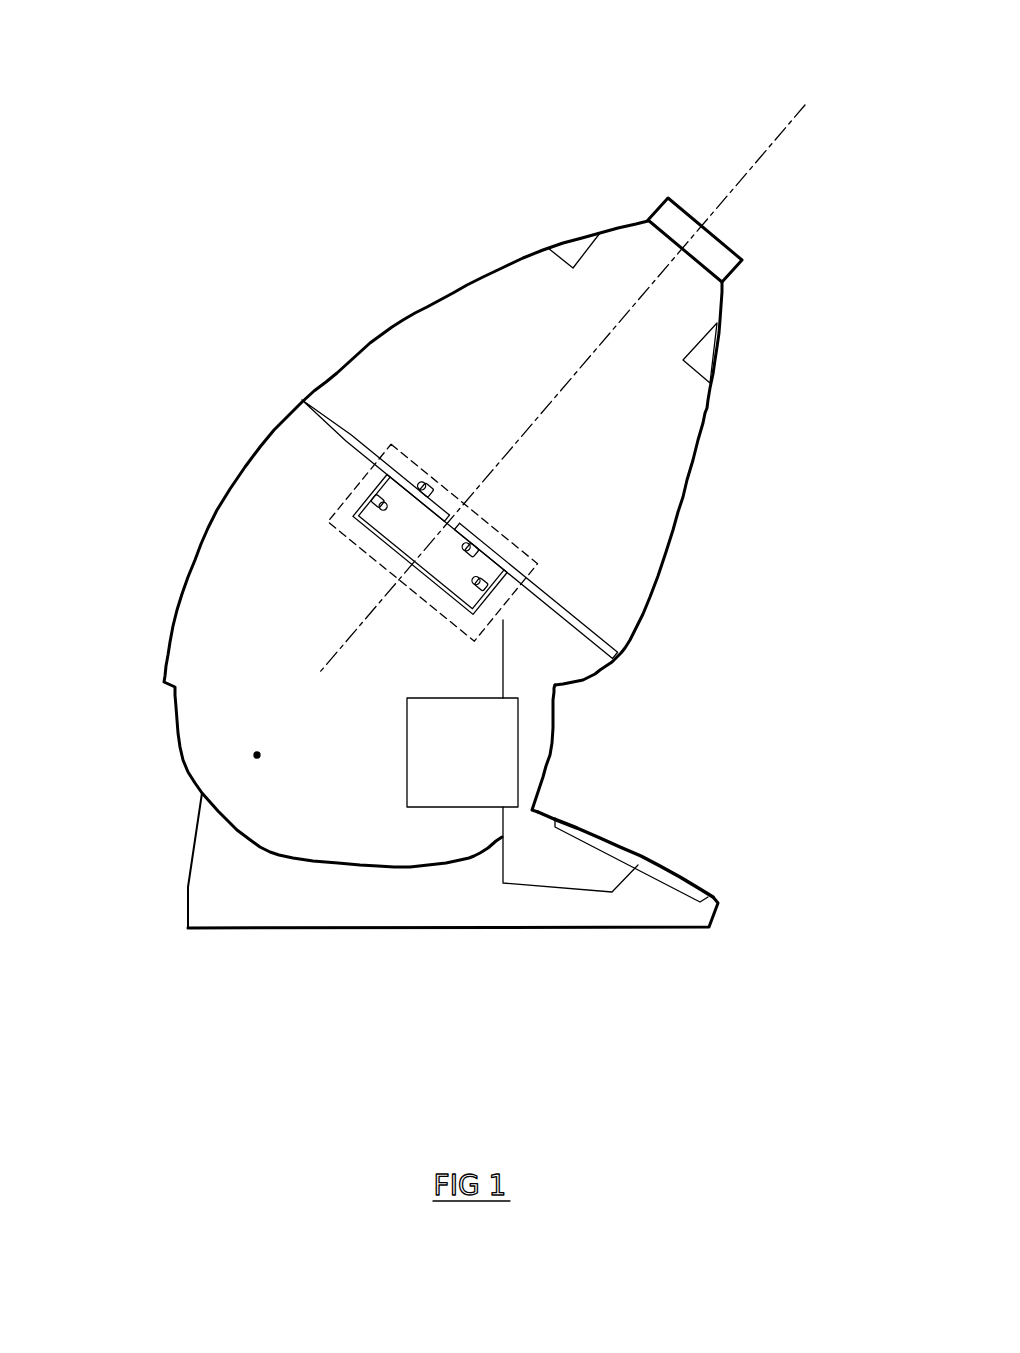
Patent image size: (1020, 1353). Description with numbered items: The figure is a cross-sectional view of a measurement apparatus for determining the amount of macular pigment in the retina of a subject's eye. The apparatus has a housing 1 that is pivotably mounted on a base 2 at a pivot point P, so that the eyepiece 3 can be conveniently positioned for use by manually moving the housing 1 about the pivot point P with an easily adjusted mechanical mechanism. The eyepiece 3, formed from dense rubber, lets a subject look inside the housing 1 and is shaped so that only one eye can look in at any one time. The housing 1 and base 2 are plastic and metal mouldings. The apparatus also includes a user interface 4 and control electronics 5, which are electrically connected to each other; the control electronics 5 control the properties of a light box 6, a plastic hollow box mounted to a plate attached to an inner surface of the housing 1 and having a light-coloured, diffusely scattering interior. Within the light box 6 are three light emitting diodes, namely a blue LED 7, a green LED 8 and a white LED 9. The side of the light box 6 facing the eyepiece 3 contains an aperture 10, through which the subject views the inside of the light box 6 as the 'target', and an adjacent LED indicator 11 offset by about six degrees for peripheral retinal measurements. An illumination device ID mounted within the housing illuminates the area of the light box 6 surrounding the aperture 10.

The housing 1 is at (680, 428).
The base 2 is at (280, 902).
The eyepiece 3 is at (677, 220).
The user interface 4 is at (687, 870).
The control electronics 5 is at (493, 753).
The light box 6 is at (393, 443).
The blue LED 7 is at (355, 496).
The green LED 8 is at (557, 688).
The white LED 9 is at (470, 553).
The aperture 10 is at (450, 512).
The LED indicator 11 is at (395, 468).
The illumination device ID is at (578, 248).
The pivot point P is at (257, 755).